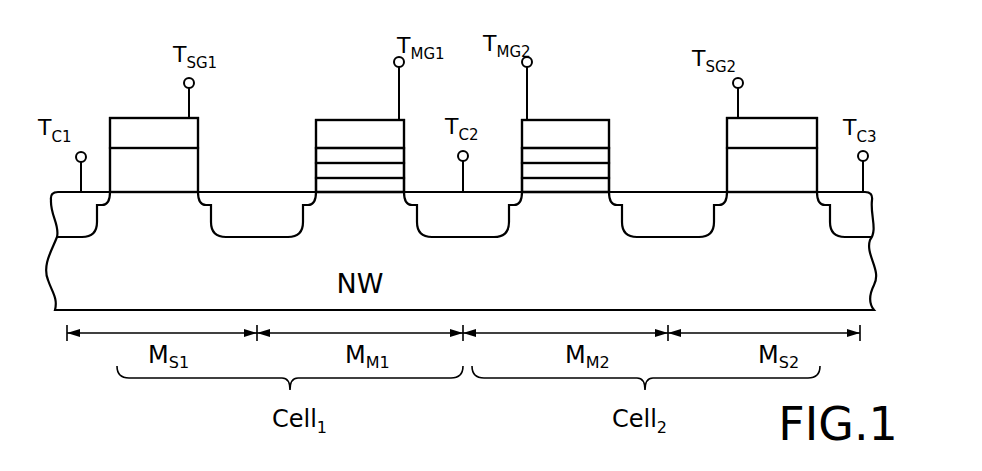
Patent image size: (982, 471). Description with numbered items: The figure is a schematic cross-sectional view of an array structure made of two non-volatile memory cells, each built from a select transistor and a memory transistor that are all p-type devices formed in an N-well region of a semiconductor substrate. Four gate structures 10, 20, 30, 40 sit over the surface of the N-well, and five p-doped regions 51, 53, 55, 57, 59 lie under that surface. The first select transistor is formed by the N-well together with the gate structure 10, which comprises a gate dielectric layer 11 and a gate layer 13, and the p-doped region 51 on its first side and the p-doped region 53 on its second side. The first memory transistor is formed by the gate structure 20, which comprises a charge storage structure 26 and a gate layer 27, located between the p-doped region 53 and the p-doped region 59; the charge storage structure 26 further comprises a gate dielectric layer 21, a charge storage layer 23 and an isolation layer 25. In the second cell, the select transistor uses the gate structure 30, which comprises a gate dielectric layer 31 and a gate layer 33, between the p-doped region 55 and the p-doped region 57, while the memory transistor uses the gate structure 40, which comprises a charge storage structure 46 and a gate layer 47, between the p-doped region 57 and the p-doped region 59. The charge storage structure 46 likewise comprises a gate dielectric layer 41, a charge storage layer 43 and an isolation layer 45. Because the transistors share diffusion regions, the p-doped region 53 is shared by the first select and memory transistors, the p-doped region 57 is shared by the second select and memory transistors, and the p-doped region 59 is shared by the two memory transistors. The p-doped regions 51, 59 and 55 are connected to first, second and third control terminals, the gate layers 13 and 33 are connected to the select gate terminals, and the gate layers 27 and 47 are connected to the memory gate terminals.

The gate structure 10 is at (110, 72).
The gate dielectric layer 11 is at (148, 166).
The gate layer 13 is at (116, 130).
The gate structure 20 is at (258, 36).
The gate dielectric layer 21 is at (323, 186).
The charge storage layer 23 is at (319, 176).
The isolation layer 25 is at (347, 155).
The charge storage structure 26 is at (268, 78).
The gate layer 27 is at (368, 133).
The gate structure 30 is at (816, 73).
The gate dielectric layer 31 is at (777, 165).
The gate layer 33 is at (808, 133).
The gate structure 40 is at (546, 36).
The gate dielectric layer 41 is at (607, 186).
The charge storage layer 43 is at (603, 174).
The isolation layer 45 is at (582, 155).
The charge storage structure 46 is at (658, 78).
The gate layer 47 is at (558, 133).
The p-doped region 51 is at (86, 238).
The p-doped region 53 is at (247, 238).
The p-doped region 55 is at (852, 238).
The p-doped region 57 is at (677, 238).
The p-doped region 59 is at (477, 238).